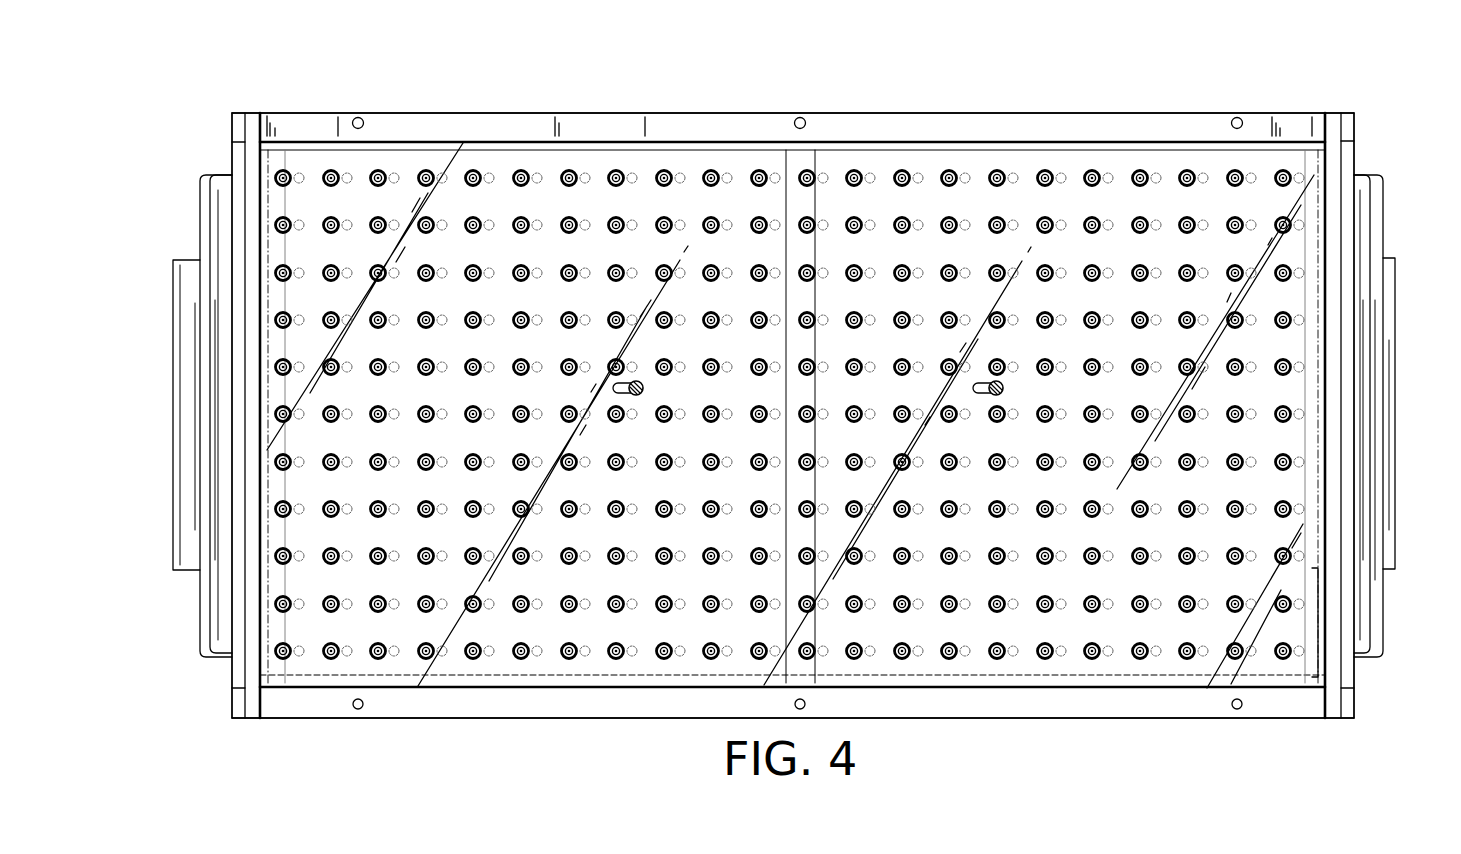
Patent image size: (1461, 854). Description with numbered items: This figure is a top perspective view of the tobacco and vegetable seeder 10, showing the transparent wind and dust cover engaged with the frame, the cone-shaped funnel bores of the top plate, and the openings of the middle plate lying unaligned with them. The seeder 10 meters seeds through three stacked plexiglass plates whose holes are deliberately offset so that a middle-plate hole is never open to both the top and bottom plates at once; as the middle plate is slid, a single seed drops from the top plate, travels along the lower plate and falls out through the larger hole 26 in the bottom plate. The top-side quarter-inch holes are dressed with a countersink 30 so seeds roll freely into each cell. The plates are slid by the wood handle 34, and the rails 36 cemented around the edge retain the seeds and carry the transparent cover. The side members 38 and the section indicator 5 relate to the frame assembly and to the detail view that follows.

The tobacco and vegetable seeder 10 is at (1012, 84).
The larger hole in the bottom plate 26 is at (1157, 175).
The countersink 30 is at (1044, 170).
The wood handle 34 is at (178, 549).
The rails 36 is at (892, 124).
The side frame rails 38 is at (1348, 156).
The section line for FIG. 5 is at (152, 385).